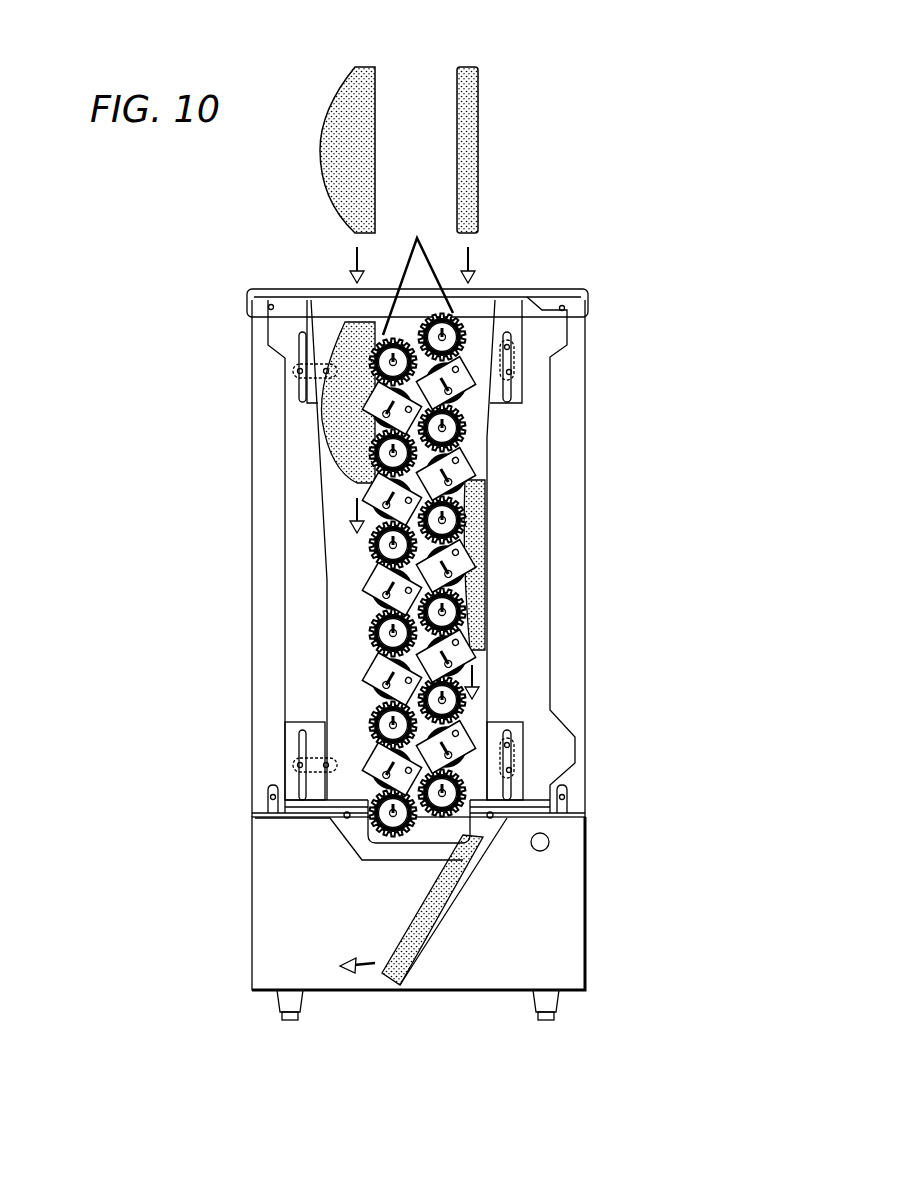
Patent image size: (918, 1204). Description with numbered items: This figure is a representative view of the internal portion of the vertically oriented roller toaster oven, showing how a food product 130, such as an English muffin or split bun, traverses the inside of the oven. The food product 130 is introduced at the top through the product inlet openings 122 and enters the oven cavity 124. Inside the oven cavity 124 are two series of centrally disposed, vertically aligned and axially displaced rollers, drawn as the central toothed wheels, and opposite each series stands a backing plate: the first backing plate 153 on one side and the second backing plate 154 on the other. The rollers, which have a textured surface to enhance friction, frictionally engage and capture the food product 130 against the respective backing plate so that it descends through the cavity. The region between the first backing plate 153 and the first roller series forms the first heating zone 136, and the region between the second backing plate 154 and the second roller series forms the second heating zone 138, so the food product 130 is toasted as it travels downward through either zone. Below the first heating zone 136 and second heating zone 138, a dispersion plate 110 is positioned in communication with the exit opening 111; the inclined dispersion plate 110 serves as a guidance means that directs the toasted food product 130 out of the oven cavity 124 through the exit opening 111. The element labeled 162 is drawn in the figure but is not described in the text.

The dispersion plate 110 is at (460, 893).
The exit opening 111 is at (330, 948).
The product inlet openings 122 is at (334, 303).
The oven cavity 124 is at (307, 500).
The food product 130 is at (347, 100).
The first heating zone 136 is at (477, 445).
The second heating zone 138 is at (350, 587).
The first backing plate 153 is at (493, 568).
The second backing plate 154 is at (327, 557).
The rotor plate 162 is at (460, 412).